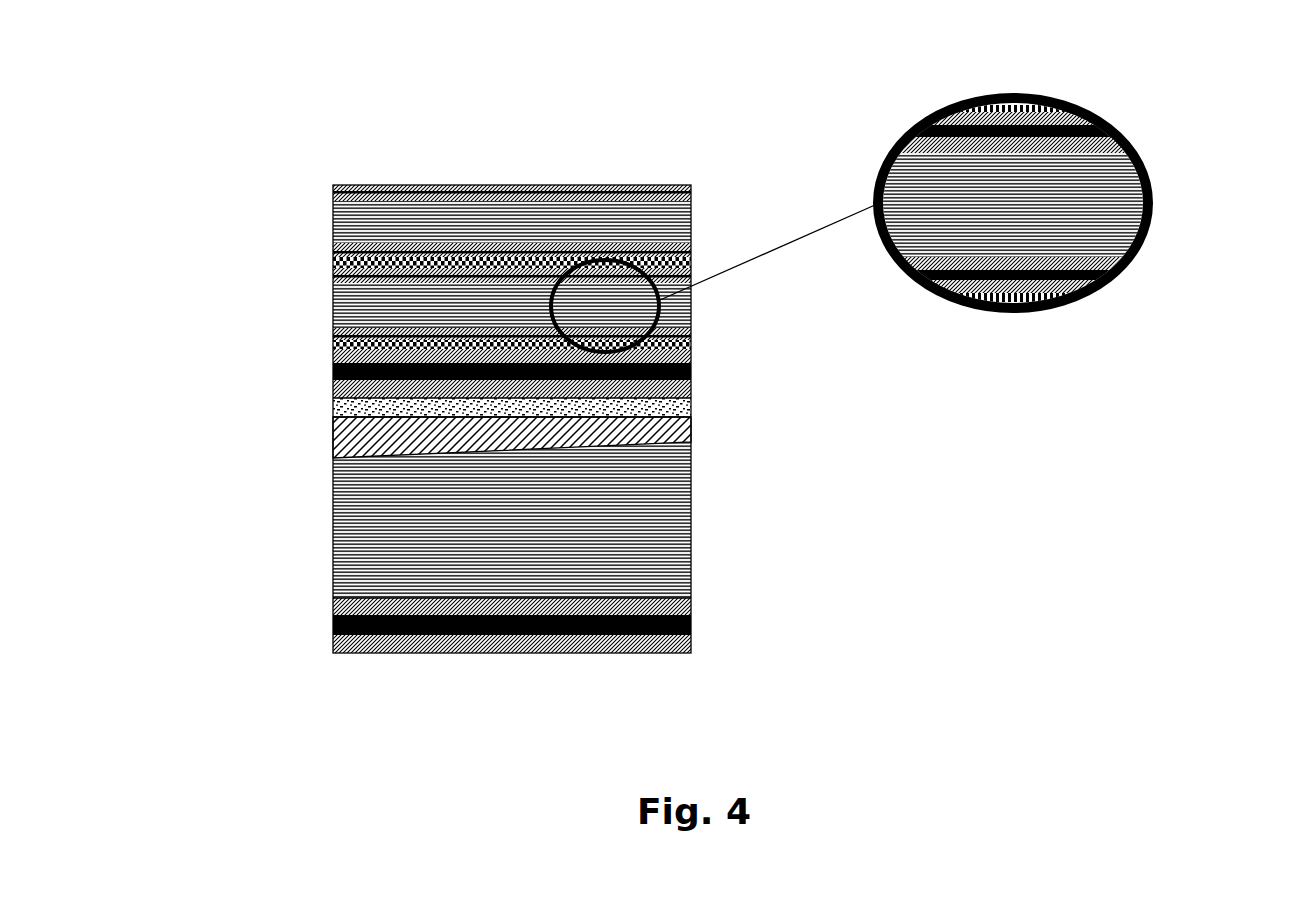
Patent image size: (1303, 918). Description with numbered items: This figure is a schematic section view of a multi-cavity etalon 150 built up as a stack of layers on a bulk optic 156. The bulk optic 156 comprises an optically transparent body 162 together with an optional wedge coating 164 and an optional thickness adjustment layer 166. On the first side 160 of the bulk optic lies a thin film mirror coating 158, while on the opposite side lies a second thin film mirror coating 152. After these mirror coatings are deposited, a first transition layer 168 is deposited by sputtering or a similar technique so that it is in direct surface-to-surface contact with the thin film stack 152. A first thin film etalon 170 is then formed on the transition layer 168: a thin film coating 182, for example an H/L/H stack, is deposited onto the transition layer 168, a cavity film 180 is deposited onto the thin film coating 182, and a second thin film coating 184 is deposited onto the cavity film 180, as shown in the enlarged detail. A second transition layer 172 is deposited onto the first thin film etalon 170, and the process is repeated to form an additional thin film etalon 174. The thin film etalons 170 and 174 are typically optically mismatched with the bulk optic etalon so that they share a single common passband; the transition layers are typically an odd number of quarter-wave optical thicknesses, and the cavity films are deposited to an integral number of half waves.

The multi-cavity etalon 150 is at (195, 183).
The thin film mirror coating 152 is at (323, 343).
The bulk optic 156 is at (323, 403).
The thin film mirror coating 158 is at (323, 598).
The first side 160 is at (566, 600).
The optically transparent body 162 is at (692, 522).
The wedge coating 164 is at (692, 432).
The thickness adjustment layer 166 is at (692, 410).
The first transition layer 168 is at (700, 350).
The thin film etalon 170 is at (323, 268).
The second transition layer 172 is at (333, 263).
The thin film etalon 174 is at (323, 184).
The cavity film 180 is at (1153, 205).
The thin film coating 182 is at (1133, 262).
The second thin film coating 184 is at (1133, 113).